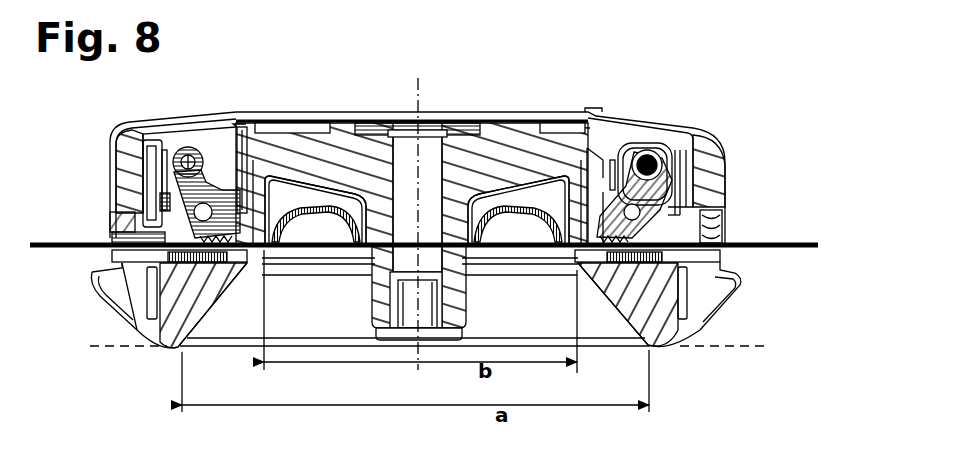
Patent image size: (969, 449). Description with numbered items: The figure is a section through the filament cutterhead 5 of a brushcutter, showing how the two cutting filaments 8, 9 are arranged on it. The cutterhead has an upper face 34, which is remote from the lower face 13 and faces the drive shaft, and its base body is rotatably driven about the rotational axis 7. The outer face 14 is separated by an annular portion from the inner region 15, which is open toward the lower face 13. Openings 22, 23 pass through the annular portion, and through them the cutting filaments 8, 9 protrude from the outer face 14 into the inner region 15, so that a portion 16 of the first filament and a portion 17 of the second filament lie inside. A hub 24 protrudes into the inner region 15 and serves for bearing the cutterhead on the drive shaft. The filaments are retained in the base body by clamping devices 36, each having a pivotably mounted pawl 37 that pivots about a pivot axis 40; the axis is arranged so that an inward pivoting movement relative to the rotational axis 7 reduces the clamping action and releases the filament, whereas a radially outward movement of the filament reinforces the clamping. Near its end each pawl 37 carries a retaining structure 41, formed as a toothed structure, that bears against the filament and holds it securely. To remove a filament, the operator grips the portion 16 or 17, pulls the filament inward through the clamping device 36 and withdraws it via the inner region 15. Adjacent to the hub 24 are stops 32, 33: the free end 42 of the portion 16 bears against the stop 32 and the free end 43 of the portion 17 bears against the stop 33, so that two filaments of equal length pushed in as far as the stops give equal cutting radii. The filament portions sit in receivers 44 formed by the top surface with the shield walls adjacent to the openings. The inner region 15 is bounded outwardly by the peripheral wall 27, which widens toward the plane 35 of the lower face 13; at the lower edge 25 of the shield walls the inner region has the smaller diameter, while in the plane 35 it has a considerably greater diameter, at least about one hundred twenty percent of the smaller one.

The filament cutterhead 5 is at (703, 77).
The rotational axis 7 is at (420, 88).
The cutting filament 8 is at (67, 252).
The cutting filament 9 is at (767, 253).
The lower face 13 is at (170, 350).
The outer face 14 is at (727, 163).
The inner region 15 is at (245, 320).
The portion of the cutting filament 16 is at (312, 253).
The portion of the cutting filament 17 is at (527, 252).
The opening 22 is at (110, 218).
The opening 23 is at (725, 227).
The hub 24 is at (380, 308).
The lower edge 25 is at (322, 260).
The peripheral wall 27 is at (620, 317).
The stop 32 is at (350, 200).
The stop 33 is at (477, 207).
The upper face 34 is at (610, 110).
The plane 35 is at (733, 348).
The clamping device 36 is at (235, 193).
The pawl 37 is at (178, 190).
The pivot axis 40 is at (188, 160).
The retaining structure 41 is at (147, 198).
The free end 42 is at (353, 260).
The free end 43 is at (483, 252).
The receiver 44 is at (657, 297).